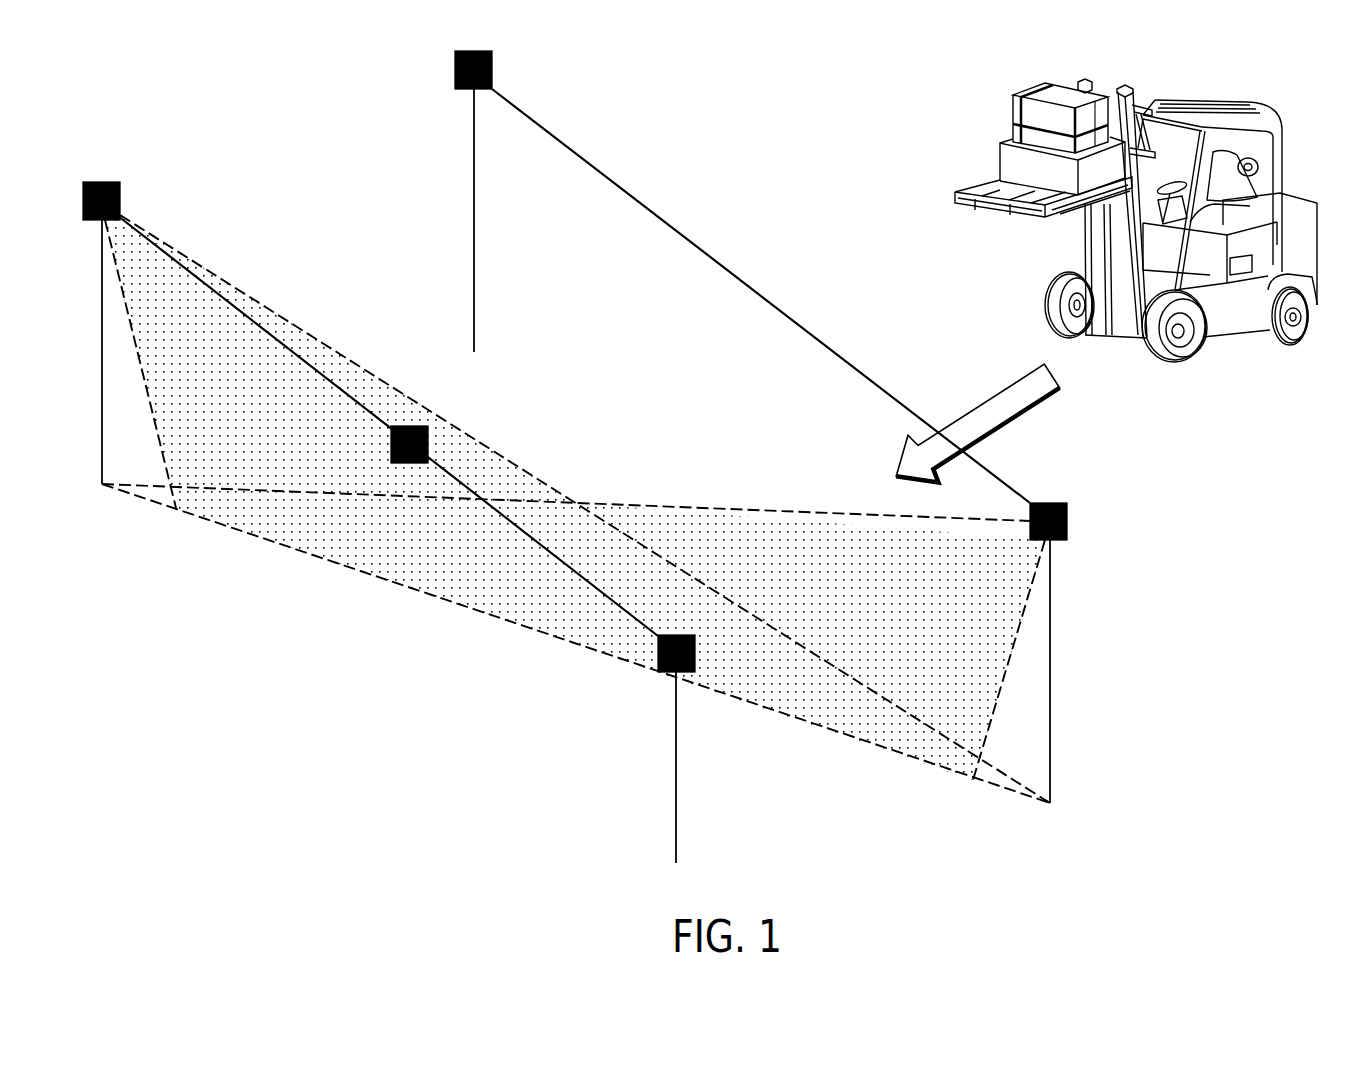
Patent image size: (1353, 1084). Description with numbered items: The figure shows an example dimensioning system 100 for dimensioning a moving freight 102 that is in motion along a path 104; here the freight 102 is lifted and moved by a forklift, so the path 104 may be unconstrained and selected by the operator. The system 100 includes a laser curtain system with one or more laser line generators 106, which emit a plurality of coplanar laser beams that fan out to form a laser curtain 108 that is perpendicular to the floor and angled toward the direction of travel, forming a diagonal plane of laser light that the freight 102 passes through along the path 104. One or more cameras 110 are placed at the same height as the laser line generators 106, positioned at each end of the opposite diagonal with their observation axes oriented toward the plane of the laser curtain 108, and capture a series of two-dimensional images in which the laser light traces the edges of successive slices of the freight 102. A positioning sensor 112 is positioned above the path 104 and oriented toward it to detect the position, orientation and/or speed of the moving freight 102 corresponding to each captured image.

The dimensioning system 100 is at (153, 84).
The moving freight 102 is at (1010, 129).
The path 104 is at (980, 403).
The laser line generators 106 is at (120, 205).
The laser curtain 108 is at (278, 314).
The cameras 110 is at (455, 70).
The positioning sensor 112 is at (428, 428).